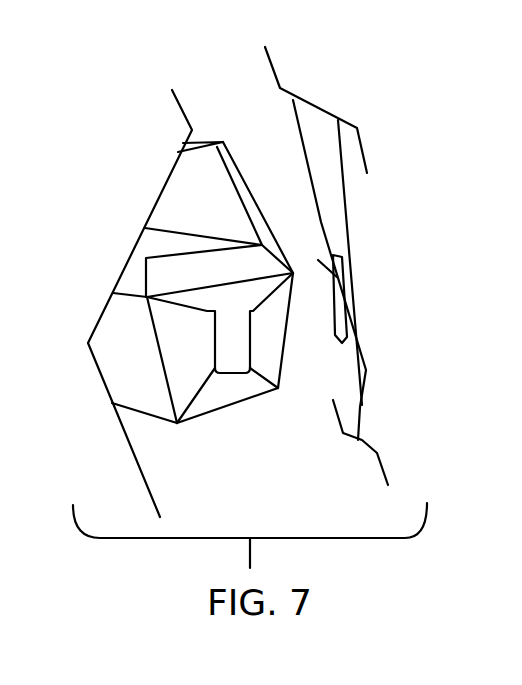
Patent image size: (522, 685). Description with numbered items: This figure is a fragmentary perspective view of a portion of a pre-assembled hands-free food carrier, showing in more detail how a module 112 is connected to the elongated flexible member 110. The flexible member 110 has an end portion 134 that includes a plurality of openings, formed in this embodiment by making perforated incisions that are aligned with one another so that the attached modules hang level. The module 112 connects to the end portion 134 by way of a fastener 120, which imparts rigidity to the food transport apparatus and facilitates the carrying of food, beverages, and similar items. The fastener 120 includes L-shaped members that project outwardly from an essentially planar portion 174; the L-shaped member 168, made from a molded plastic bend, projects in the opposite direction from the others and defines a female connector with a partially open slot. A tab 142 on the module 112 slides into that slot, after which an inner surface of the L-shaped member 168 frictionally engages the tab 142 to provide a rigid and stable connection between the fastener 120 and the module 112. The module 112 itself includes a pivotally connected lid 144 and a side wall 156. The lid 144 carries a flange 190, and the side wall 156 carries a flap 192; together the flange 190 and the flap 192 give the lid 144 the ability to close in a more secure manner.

The elongated flexible member 110 is at (354, 270).
The module 112 is at (217, 72).
The fastener 120 is at (305, 225).
The end portion 134 is at (330, 142).
The tab 142 is at (233, 367).
The lid 144 is at (165, 200).
The side wall 156 is at (163, 330).
The L-shaped member 168 is at (337, 313).
The essentially planar portion 174 is at (335, 253).
The flange 190 is at (192, 147).
The flap 192 is at (155, 273).